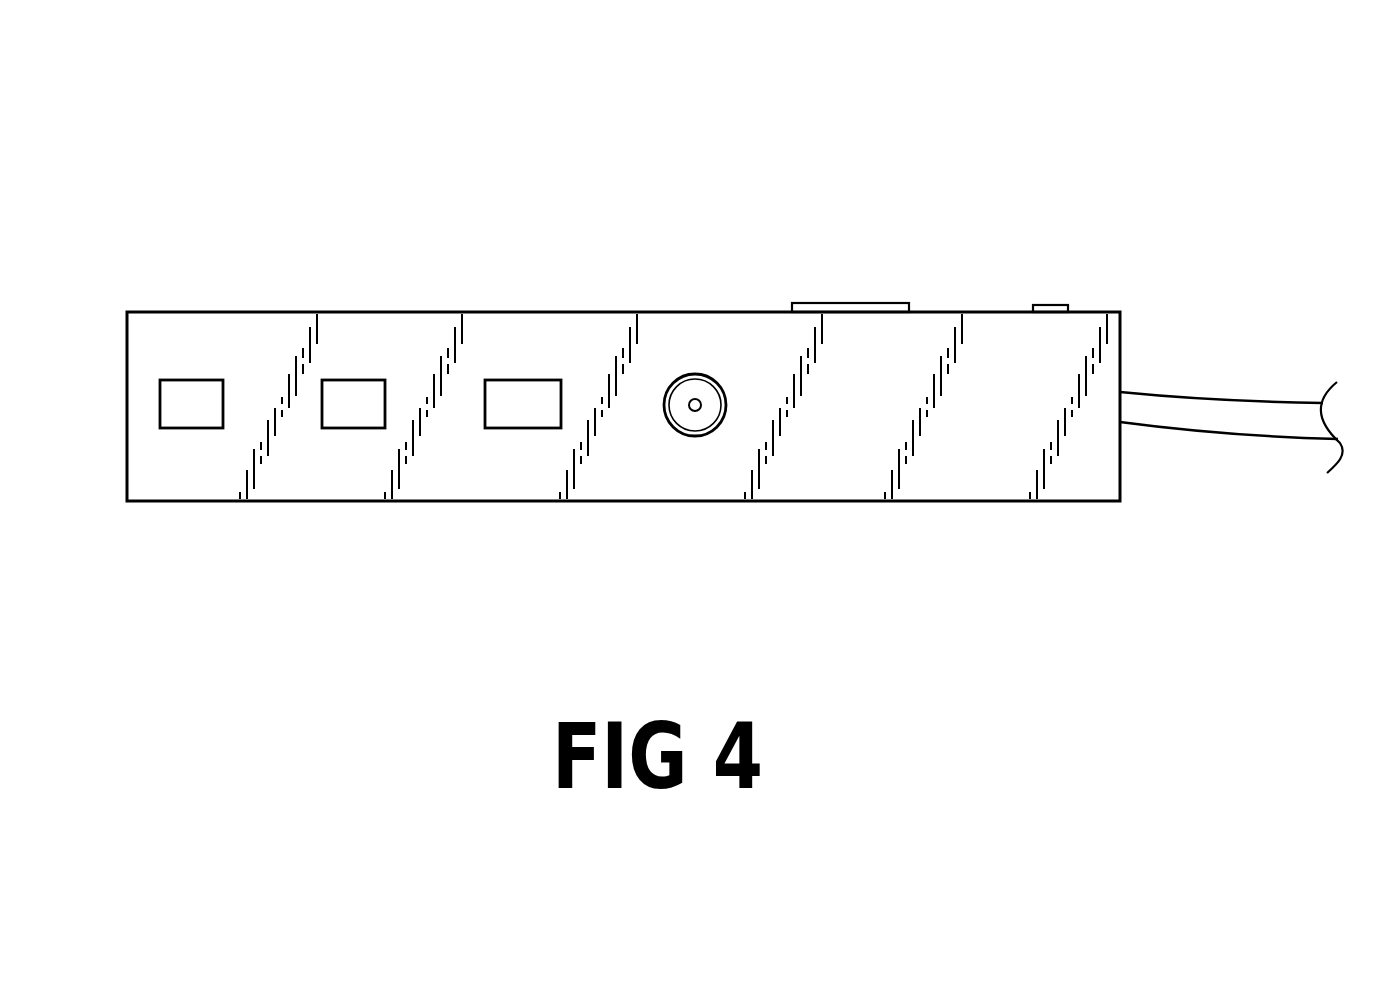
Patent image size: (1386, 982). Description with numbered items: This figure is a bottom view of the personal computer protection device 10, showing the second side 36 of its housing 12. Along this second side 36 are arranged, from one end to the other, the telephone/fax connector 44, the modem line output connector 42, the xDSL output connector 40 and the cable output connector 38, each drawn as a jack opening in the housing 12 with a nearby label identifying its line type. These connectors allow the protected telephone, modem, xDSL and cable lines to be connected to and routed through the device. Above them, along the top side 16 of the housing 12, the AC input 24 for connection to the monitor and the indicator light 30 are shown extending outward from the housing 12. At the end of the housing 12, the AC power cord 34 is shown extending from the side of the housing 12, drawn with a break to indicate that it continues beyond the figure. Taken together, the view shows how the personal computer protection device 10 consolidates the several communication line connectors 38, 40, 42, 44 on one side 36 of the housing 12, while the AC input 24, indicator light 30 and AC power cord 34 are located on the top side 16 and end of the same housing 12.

The personal computer protection device 10 is at (1007, 247).
The housing 12 is at (462, 312).
The top side 16 is at (627, 312).
The AC input 24 is at (878, 303).
The indicator light 30 is at (1048, 303).
The AC power cord 34 is at (1300, 440).
The second side 36 is at (958, 465).
The cable output connector 38 is at (670, 417).
The xDSL output connector 40 is at (500, 415).
The modem line output connector 42 is at (353, 412).
The telephone/fax connector 44 is at (193, 405).